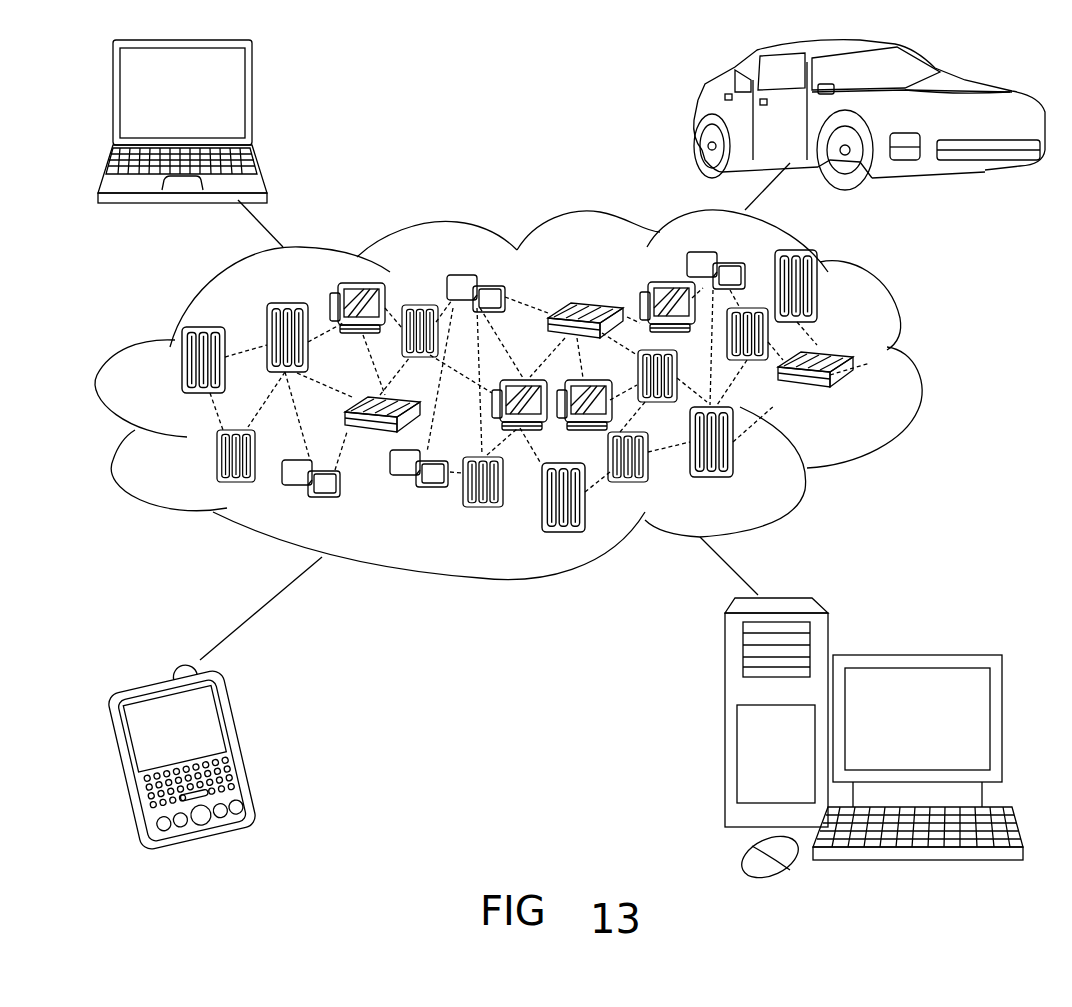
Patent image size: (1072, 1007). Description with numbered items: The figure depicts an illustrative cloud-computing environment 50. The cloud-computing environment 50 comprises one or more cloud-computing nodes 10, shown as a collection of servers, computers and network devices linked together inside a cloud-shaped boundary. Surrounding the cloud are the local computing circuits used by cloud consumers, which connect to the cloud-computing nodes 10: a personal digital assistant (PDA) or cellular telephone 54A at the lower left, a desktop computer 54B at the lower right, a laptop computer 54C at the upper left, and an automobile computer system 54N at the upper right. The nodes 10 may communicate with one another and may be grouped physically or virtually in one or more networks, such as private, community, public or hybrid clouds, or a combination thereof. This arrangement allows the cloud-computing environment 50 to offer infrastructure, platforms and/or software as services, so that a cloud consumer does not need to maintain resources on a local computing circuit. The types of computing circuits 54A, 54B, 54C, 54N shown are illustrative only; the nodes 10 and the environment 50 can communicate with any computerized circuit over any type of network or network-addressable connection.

The cloud-computing nodes 10 is at (862, 402).
The cloud-computing environment 50 is at (917, 372).
The personal digital assistant (PDA) or cellular telephone 54A is at (242, 750).
The desktop computer 54B is at (913, 655).
The laptop computer 54C is at (253, 102).
The automobile computer system 54N is at (693, 118).